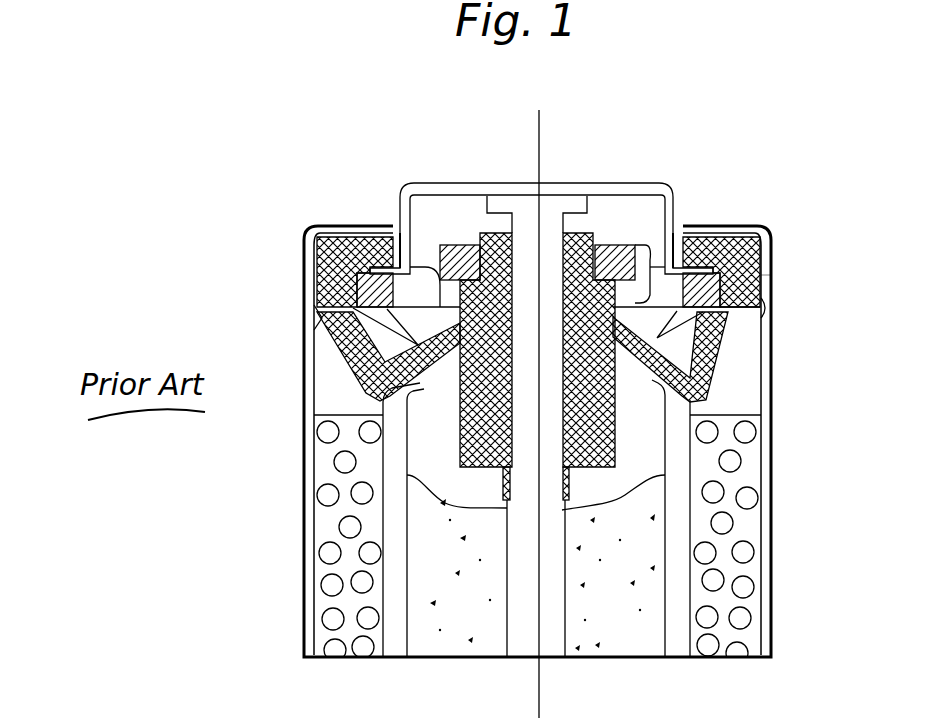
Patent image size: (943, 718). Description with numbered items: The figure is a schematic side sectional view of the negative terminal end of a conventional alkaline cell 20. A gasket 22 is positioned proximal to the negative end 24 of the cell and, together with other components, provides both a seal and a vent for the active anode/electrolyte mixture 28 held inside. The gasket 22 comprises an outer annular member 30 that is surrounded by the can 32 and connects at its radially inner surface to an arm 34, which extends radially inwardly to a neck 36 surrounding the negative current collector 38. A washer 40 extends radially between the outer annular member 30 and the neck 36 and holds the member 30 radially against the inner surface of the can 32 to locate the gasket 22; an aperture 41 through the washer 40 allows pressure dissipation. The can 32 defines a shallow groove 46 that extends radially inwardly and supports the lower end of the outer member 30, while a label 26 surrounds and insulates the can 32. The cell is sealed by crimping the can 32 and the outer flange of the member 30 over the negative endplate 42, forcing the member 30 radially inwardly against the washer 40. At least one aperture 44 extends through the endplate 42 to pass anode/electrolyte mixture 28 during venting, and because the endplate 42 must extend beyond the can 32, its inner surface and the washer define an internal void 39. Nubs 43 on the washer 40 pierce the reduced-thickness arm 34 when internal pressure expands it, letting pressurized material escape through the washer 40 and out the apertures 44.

The alkaline cell 20 is at (388, 150).
The gasket 22 is at (496, 233).
The negative end 24 is at (581, 186).
The label 26 is at (775, 370).
The anode/electrolyte mixture 28 is at (617, 660).
The outer annular member 30 is at (774, 263).
The can 32 is at (774, 288).
The arm 34 is at (433, 363).
The neck 36 is at (617, 395).
The negative current collector 38 is at (573, 224).
The internal void 39 is at (652, 231).
The washer 40 is at (463, 244).
The aperture 41 is at (670, 297).
The negative endplate 42 is at (640, 177).
The nubs 43 is at (402, 326).
The aperture 44 is at (395, 222).
The shallow groove 46 is at (778, 312).